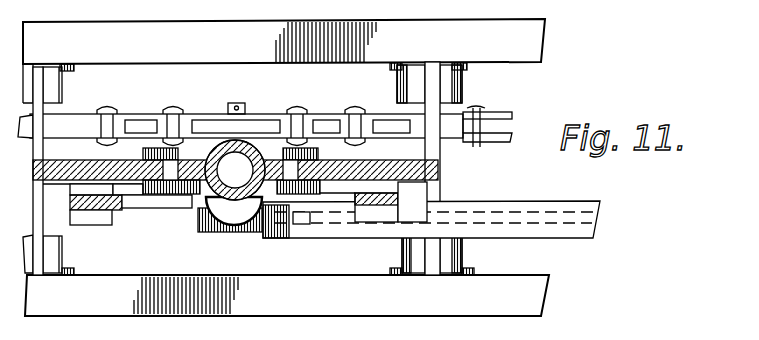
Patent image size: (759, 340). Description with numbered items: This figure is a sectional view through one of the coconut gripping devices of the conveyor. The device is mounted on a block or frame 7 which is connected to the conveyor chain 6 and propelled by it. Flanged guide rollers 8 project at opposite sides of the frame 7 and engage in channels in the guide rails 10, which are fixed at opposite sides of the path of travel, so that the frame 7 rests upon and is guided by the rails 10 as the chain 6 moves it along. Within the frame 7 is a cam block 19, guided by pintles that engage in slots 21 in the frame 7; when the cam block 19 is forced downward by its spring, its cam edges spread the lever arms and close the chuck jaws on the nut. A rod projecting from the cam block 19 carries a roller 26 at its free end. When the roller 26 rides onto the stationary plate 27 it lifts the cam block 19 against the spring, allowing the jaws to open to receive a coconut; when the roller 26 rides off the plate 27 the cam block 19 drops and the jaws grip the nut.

The conveyor chain 6 is at (507, 113).
The block or frame 7 is at (438, 163).
The flanged guide rollers 8 is at (63, 91).
The guide rails 10 is at (286, 167).
The cam block 19 is at (197, 200).
The slots 21 is at (172, 164).
The roller 26 is at (226, 232).
The stationary plate 27 is at (524, 205).